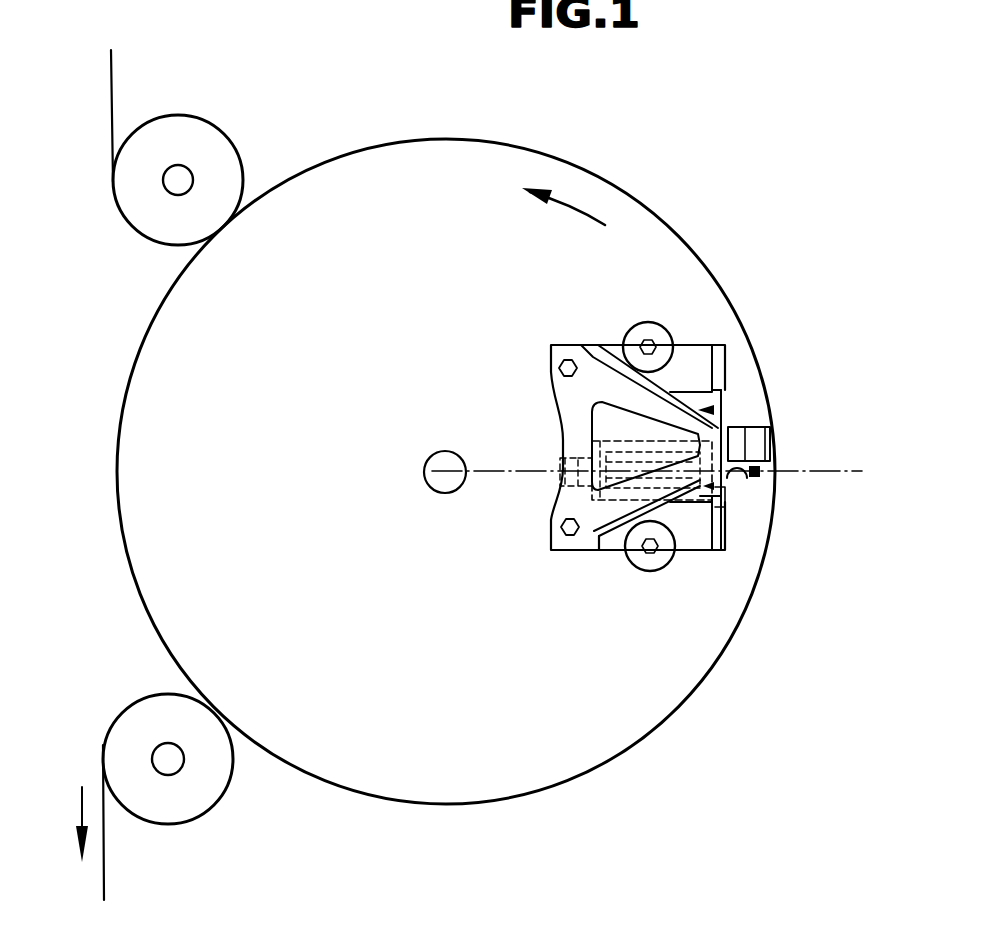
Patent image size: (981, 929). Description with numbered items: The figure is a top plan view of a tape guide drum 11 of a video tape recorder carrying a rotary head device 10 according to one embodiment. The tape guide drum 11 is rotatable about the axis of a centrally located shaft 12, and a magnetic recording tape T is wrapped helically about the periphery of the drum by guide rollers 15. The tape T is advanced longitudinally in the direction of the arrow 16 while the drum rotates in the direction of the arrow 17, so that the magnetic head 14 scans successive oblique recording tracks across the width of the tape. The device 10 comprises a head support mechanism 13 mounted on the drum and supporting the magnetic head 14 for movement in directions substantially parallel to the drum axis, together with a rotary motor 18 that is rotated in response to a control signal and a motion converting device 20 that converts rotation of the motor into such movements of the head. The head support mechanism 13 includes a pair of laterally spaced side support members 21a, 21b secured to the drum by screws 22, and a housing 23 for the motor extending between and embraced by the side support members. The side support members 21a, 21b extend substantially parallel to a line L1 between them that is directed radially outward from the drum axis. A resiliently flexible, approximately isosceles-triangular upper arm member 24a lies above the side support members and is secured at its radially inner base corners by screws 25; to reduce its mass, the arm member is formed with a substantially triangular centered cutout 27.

The rotary head device 10 is at (668, 283).
The tape guide drum 11 is at (397, 140).
The shaft 12 is at (440, 463).
The head support mechanism 13 is at (606, 561).
The magnetic head 14 is at (773, 443).
The guide rollers 15 is at (212, 137).
The arrow 16 is at (82, 805).
The arrow 17 is at (568, 207).
The rotary motor 18 is at (745, 485).
The motion converting device 20 is at (760, 484).
The side support member 21a is at (683, 381).
The side support member 21b is at (693, 540).
The screws 22 is at (651, 343).
The housing 23 is at (727, 417).
The upper arm member 24a is at (714, 410).
The screws 25 is at (568, 360).
The cutouts 27 is at (612, 406).
The magnetic recording tape T is at (104, 882).
The line L1 is at (832, 471).